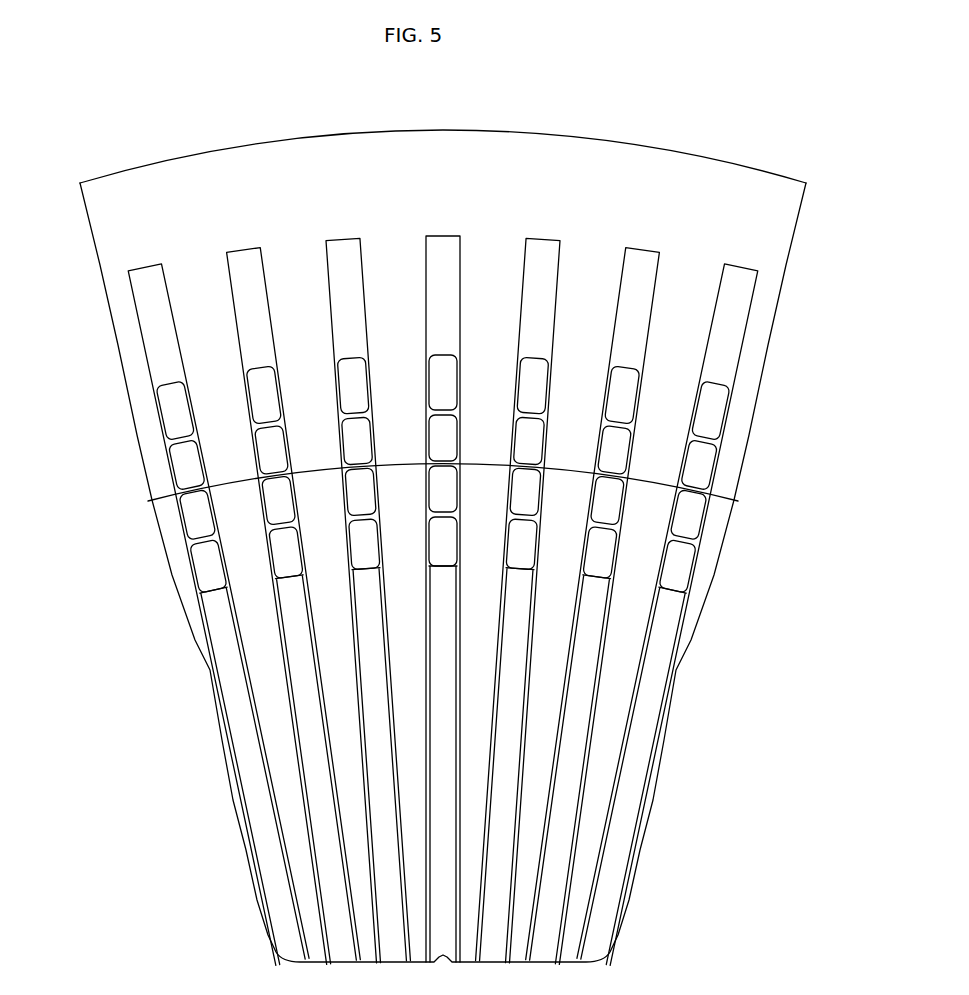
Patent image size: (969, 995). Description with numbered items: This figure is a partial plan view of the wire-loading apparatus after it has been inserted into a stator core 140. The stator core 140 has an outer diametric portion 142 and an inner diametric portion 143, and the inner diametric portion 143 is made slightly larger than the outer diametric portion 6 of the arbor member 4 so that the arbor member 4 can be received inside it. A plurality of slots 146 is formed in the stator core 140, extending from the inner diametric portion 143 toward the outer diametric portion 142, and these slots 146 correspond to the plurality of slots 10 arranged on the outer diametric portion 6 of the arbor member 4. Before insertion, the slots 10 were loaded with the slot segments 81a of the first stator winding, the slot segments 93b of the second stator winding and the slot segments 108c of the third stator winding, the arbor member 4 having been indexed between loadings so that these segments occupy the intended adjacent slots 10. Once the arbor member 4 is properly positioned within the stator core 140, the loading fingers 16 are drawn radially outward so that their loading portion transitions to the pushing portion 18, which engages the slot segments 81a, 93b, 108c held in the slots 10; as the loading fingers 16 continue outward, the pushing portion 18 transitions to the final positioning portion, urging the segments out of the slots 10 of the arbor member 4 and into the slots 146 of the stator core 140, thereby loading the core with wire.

The stator core 140 is at (148, 124).
The outer diametric portion 142 is at (401, 128).
The slots 146 is at (604, 222).
The inner diametric portion 143 is at (660, 471).
The arbor member 4 is at (750, 553).
The outer diametric portion 6 is at (232, 494).
The slots 10 is at (199, 495).
The loading fingers 16 is at (208, 630).
The pushing portion 18 is at (221, 672).
The slot segments 81a is at (440, 380).
The slot segments 93b is at (263, 382).
The slot segments 108c is at (352, 375).